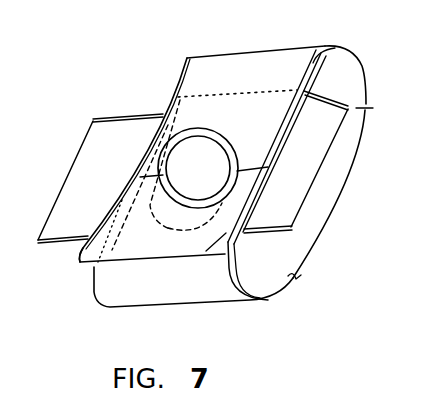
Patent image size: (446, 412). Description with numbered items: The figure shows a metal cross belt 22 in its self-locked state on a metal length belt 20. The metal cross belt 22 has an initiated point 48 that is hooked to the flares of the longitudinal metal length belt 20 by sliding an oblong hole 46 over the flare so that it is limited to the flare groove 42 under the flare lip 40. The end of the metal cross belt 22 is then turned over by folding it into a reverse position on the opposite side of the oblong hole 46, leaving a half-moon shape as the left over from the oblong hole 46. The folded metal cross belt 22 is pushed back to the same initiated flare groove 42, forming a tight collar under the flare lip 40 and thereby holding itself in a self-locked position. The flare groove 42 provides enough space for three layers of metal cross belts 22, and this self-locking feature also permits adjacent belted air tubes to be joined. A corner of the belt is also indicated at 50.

The metal length belt 20 is at (62, 188).
The metal cross belt 22 is at (242, 284).
The flare lip 40 is at (233, 140).
The flare groove 42 is at (231, 168).
The oblong hole 46 is at (150, 222).
The initiated point 48 is at (311, 91).
The rounded corner 50 is at (78, 266).